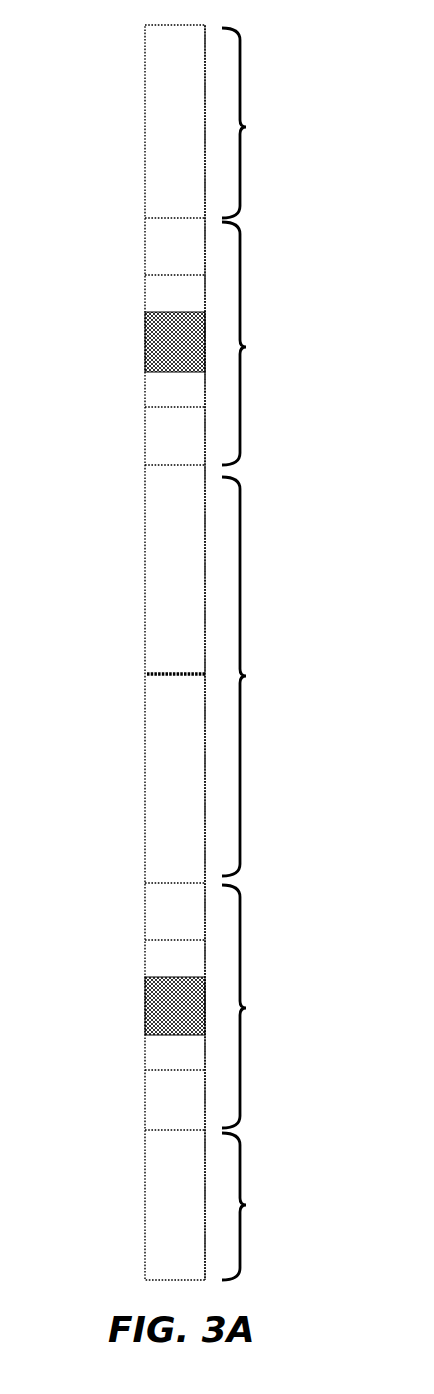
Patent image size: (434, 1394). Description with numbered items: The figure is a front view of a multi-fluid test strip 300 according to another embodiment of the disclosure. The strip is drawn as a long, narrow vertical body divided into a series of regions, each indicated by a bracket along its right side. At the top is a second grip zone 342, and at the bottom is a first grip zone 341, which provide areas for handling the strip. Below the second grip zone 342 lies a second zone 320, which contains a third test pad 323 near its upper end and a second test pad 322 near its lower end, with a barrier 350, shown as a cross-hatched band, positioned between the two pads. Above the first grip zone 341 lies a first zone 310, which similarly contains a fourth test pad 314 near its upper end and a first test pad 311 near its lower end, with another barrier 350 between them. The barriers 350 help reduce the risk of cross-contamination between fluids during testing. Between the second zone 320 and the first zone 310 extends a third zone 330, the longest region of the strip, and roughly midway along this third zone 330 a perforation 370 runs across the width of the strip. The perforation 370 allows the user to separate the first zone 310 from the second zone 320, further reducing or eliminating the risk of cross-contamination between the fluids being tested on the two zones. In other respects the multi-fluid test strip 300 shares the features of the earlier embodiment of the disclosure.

The multi-fluid test strip 300 is at (100, 70).
The second grip zone 342 is at (246, 127).
The second zone 320 is at (246, 347).
The third test pad 323 is at (155, 260).
The barrier 350 is at (146, 348).
The second test pad 322 is at (155, 443).
The third zone 330 is at (246, 676).
The perforation 370 is at (147, 673).
The first zone 310 is at (246, 1008).
The fourth test pad 314 is at (160, 920).
The first test pad 311 is at (160, 1111).
The first grip zone 341 is at (246, 1205).